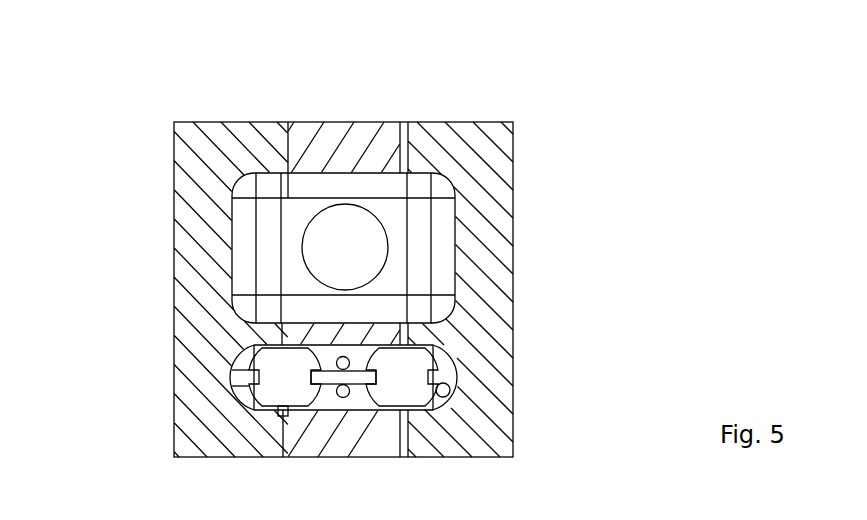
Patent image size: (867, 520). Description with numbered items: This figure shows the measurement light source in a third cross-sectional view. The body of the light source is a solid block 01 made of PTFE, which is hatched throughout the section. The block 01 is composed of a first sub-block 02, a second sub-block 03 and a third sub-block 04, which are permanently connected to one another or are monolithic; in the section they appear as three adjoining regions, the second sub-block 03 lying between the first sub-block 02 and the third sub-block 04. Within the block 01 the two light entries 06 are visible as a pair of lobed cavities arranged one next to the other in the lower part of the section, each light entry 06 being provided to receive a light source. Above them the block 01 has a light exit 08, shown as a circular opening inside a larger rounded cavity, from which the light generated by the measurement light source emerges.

The solid block 01 is at (505, 343).
The first sub-block 02 is at (500, 163).
The second sub-block 03 is at (348, 140).
The third sub-block 04 is at (187, 140).
The light entries 06 is at (268, 375).
The light exit 08 is at (320, 237).